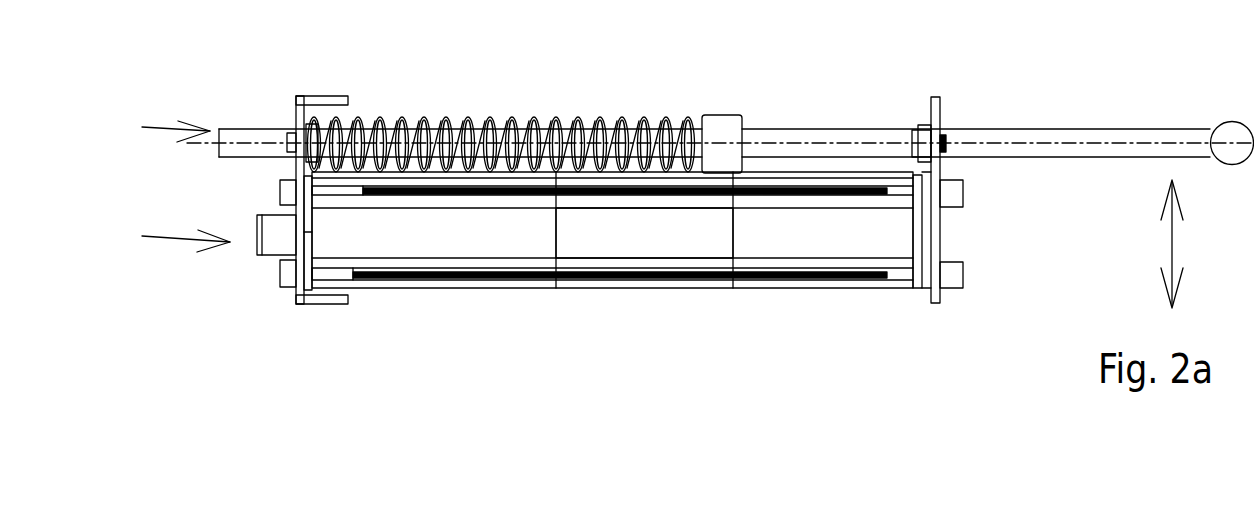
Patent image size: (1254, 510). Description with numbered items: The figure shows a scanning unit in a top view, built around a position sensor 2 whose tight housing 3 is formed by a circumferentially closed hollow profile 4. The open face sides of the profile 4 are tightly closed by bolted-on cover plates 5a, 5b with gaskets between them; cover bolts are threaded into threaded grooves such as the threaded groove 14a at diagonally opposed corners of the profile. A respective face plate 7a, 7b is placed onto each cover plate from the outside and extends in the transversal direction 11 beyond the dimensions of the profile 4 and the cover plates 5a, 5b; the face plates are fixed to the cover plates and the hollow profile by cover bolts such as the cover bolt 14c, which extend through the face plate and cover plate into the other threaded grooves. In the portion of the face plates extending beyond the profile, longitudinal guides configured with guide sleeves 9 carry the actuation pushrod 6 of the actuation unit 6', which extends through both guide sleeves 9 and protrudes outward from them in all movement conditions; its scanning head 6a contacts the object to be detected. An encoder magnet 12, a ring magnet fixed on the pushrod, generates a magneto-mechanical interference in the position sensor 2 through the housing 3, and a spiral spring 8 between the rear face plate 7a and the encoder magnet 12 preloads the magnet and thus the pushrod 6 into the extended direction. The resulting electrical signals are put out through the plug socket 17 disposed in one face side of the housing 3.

The position sensor 2 is at (607, 313).
The housing 3 is at (644, 230).
The hollow profile 4 is at (644, 233).
The cover plate 5a is at (308, 270).
The cover plate 5b is at (922, 250).
The actuation pushrod 6 is at (714, 182).
The actuation unit 6' is at (164, 126).
The scanning head 6a is at (1232, 122).
The face plate 7a is at (296, 97).
The face plate 7b is at (935, 112).
The spiral spring 8 is at (582, 125).
The guide sleeve 9 is at (313, 125).
The transversal direction 11 is at (1172, 248).
The encoder magnet 12 is at (715, 115).
The threaded groove 14a is at (767, 275).
The cover bolt 14c is at (819, 191).
The plug socket 17 is at (272, 238).